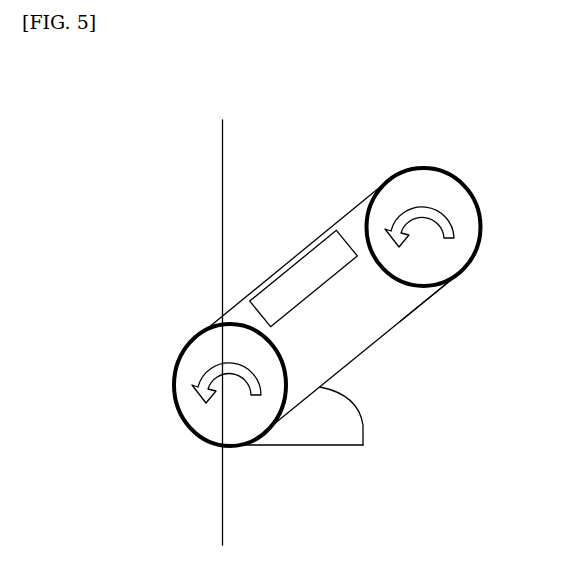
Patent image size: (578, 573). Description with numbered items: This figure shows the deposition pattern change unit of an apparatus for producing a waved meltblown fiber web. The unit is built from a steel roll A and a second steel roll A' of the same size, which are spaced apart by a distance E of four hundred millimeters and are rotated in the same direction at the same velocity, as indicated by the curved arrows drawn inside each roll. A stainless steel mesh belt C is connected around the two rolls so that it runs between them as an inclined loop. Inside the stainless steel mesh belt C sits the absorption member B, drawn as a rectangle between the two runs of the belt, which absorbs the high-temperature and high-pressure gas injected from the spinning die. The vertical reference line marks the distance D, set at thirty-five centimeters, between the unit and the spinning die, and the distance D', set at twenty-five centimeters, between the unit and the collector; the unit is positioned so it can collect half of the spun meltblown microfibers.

The steel roll A is at (223, 351).
The steel roll A' is at (428, 268).
The absorption member B is at (323, 260).
The stainless steel mesh belt C is at (399, 322).
The distance between the deposition pattern change unit and the spinning die D is at (165, 282).
The distance between the deposition pattern change unit and the collector D' is at (165, 495).
The distance between the steel rolls E is at (360, 277).